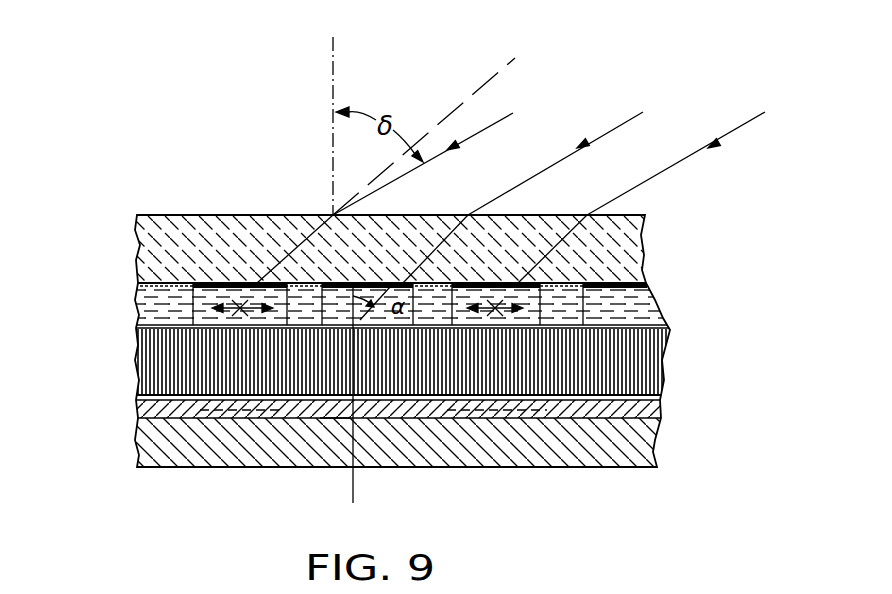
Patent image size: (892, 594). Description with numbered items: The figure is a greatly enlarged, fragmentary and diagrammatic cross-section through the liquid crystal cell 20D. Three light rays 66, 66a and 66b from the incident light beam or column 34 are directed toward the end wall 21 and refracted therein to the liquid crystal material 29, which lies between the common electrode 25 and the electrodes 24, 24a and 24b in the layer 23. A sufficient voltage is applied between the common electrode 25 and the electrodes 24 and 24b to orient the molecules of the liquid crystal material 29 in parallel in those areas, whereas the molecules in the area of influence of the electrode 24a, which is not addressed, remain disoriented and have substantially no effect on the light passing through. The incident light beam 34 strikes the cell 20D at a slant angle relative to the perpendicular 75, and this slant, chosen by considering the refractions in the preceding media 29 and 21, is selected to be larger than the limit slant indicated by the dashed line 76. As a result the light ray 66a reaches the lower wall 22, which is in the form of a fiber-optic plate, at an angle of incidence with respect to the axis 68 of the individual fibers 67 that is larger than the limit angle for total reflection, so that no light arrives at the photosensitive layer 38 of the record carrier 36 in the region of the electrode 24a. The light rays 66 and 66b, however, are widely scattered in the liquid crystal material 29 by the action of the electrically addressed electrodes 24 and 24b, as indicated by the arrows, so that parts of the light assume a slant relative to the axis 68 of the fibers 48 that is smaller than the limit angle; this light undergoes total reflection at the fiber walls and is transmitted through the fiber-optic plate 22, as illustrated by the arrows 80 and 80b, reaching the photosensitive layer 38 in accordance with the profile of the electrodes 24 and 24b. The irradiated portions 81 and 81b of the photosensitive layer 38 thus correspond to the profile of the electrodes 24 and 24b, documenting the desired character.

The cell 20D is at (178, 214).
The end wall 21 is at (642, 253).
The lower wall 22 is at (634, 363).
The grating layer 23 is at (398, 305).
The electrode 24 is at (228, 283).
The electrode 24a is at (388, 282).
The electrode 24b is at (510, 285).
The common electrode 25 is at (142, 325).
The liquid crystal material 29 is at (150, 312).
The light beam 34 is at (495, 110).
The record carrier 36 is at (659, 448).
The photosensitive layer 38 is at (662, 412).
The fibers 48 is at (335, 410).
The light ray 66 is at (470, 143).
The light ray 66a is at (597, 140).
The light ray 66b is at (739, 140).
The individual fibers 67 is at (637, 385).
The axis 68 is at (353, 503).
The perpendicular 75 is at (331, 62).
The dashed line 76 is at (472, 92).
The arrow 80 is at (240, 296).
The arrow 80b is at (495, 296).
The irradiated portion 81 is at (200, 410).
The irradiated portion 81b is at (470, 407).